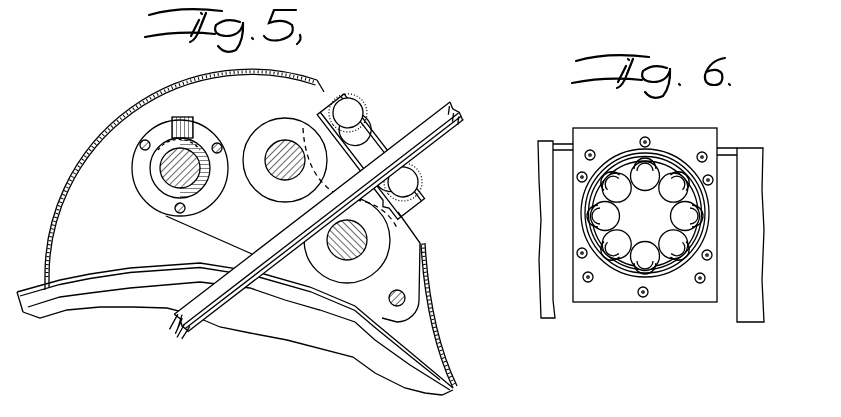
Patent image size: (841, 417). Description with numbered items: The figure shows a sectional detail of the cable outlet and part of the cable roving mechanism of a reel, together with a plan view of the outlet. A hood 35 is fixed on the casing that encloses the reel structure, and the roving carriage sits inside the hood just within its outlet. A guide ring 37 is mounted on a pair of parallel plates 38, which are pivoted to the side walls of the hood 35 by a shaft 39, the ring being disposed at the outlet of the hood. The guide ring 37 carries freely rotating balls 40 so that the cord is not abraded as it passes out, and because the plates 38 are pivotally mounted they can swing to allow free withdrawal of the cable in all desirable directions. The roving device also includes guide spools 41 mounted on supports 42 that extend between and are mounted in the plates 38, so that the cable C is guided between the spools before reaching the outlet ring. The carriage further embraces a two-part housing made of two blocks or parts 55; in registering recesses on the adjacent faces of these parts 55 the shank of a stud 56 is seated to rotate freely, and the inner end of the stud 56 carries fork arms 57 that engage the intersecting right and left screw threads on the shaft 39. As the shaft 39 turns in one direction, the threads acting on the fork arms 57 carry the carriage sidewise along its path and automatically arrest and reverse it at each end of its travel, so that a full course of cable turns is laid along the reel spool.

In FIG. 5, the hood 35 is at (100, 143).
In FIG. 6, the hood 35 is at (540, 243).
In FIG. 5, the guide ring 37 is at (427, 185).
In FIG. 6, the guide ring 37 is at (662, 165).
In FIG. 5, the plates 38 is at (352, 293).
In FIG. 5, the shaft 39 is at (163, 177).
In FIG. 5, the balls 40 is at (352, 110).
In FIG. 6, the balls 40 is at (660, 213).
In FIG. 5, the guide spools 41 is at (152, 132).
In FIG. 5, the supports 42 is at (283, 140).
In FIG. 5, the housing parts 55 is at (152, 132).
In FIG. 5, the stud 56 is at (180, 115).
In FIG. 5, the fork arms 57 is at (157, 152).
In FIG. 5, the cable C is at (420, 115).